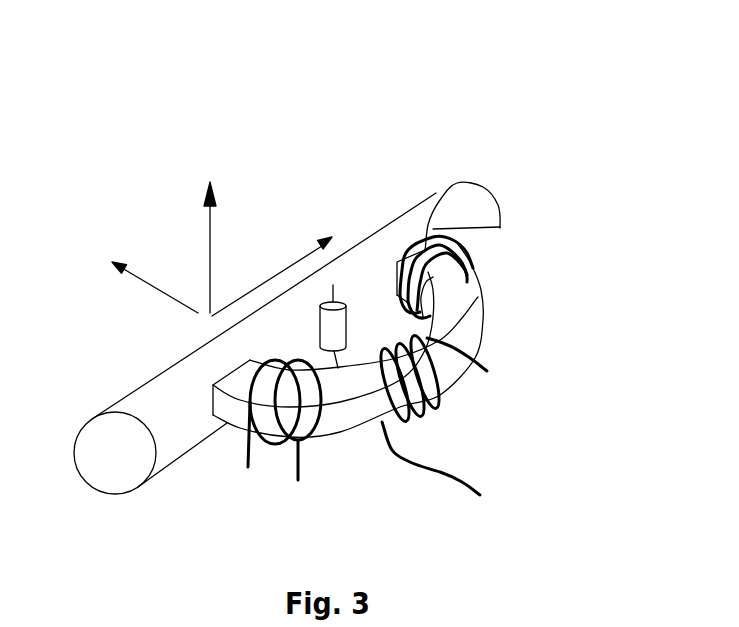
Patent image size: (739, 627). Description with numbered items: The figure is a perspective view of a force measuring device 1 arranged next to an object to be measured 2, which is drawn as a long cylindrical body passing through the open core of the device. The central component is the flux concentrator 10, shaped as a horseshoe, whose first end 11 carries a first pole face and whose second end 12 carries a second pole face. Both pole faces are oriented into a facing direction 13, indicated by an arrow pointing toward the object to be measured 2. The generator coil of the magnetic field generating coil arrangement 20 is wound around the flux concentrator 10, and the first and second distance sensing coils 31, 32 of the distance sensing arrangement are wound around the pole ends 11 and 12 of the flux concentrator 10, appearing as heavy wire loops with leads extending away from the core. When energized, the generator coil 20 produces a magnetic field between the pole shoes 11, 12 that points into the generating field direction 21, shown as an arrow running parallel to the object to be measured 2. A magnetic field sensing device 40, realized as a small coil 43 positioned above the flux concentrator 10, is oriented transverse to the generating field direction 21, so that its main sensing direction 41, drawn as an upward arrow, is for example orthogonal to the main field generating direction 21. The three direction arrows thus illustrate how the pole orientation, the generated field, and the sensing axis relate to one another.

The force measuring device 1 is at (510, 100).
The object to be measured 2 is at (165, 402).
The flux concentrator 10 is at (355, 417).
The first end 11 is at (412, 258).
The second end 12 is at (223, 410).
The facing direction 13 is at (138, 278).
The magnetic field generating coil arrangement 20 is at (427, 462).
The generating field direction 21 is at (300, 260).
The first distance sensing coil 31 is at (430, 220).
The second distance sensing coil 32 is at (288, 450).
The magnetic field sensing device 40 is at (328, 323).
The main sensing direction 41 is at (208, 232).
The coil 43 is at (333, 326).